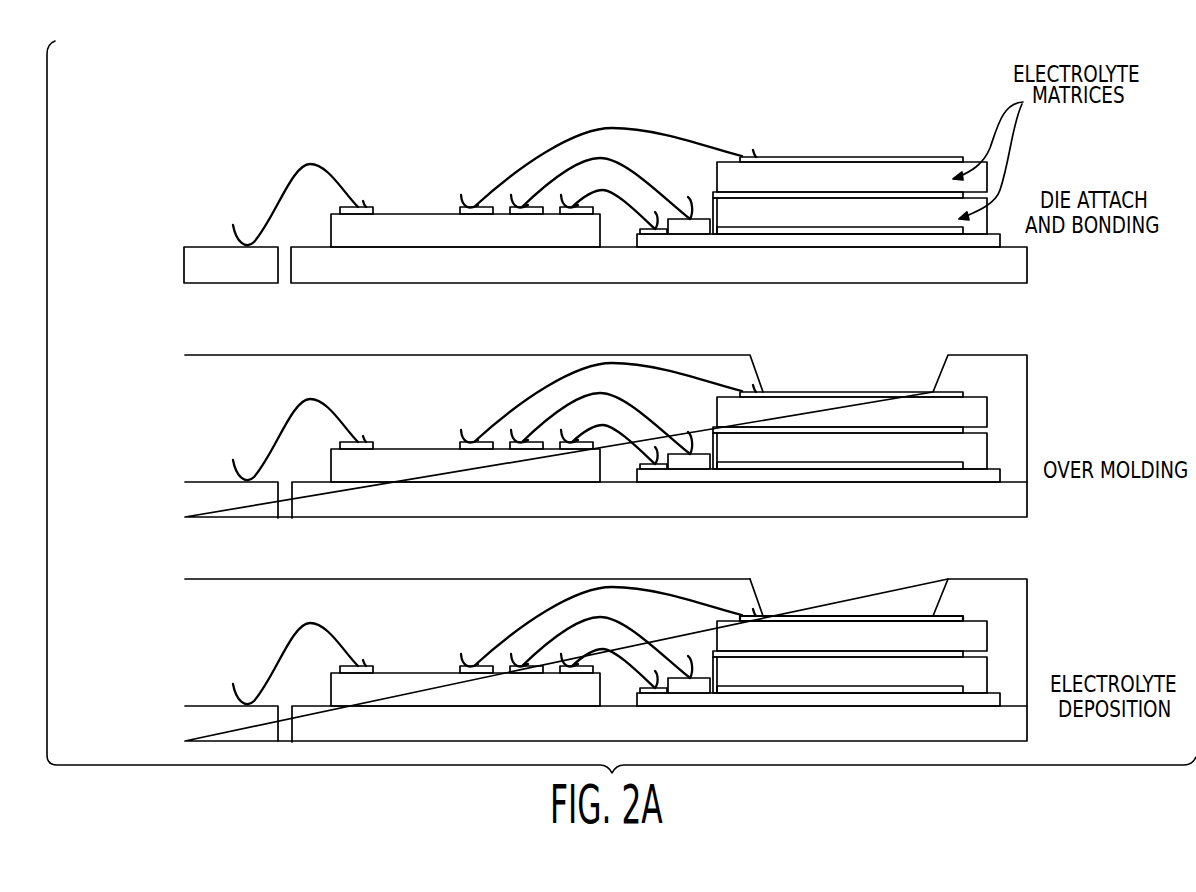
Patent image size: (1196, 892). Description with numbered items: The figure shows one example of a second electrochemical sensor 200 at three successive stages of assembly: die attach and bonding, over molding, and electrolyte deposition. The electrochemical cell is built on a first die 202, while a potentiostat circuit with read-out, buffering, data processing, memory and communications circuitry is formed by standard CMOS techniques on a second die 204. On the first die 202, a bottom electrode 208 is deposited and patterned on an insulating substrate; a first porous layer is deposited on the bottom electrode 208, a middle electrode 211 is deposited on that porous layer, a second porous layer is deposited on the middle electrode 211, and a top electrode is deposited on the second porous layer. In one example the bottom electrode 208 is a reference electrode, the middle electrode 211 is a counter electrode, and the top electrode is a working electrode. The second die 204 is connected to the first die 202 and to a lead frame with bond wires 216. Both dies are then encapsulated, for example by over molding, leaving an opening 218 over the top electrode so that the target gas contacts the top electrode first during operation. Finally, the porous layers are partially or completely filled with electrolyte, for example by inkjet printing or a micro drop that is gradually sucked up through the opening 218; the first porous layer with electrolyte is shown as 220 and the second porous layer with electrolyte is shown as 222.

The second electrochemical sensor 200 is at (132, 208).
The first die 202 is at (865, 148).
The second die 204 is at (457, 152).
The bottom electrode 208 is at (840, 394).
The middle electrode 211 is at (838, 373).
The bond wires 216 is at (296, 165).
The opening 218 is at (890, 586).
The first porous layer with electrolyte 220 is at (899, 657).
The second porous layer with electrolyte 222 is at (901, 617).